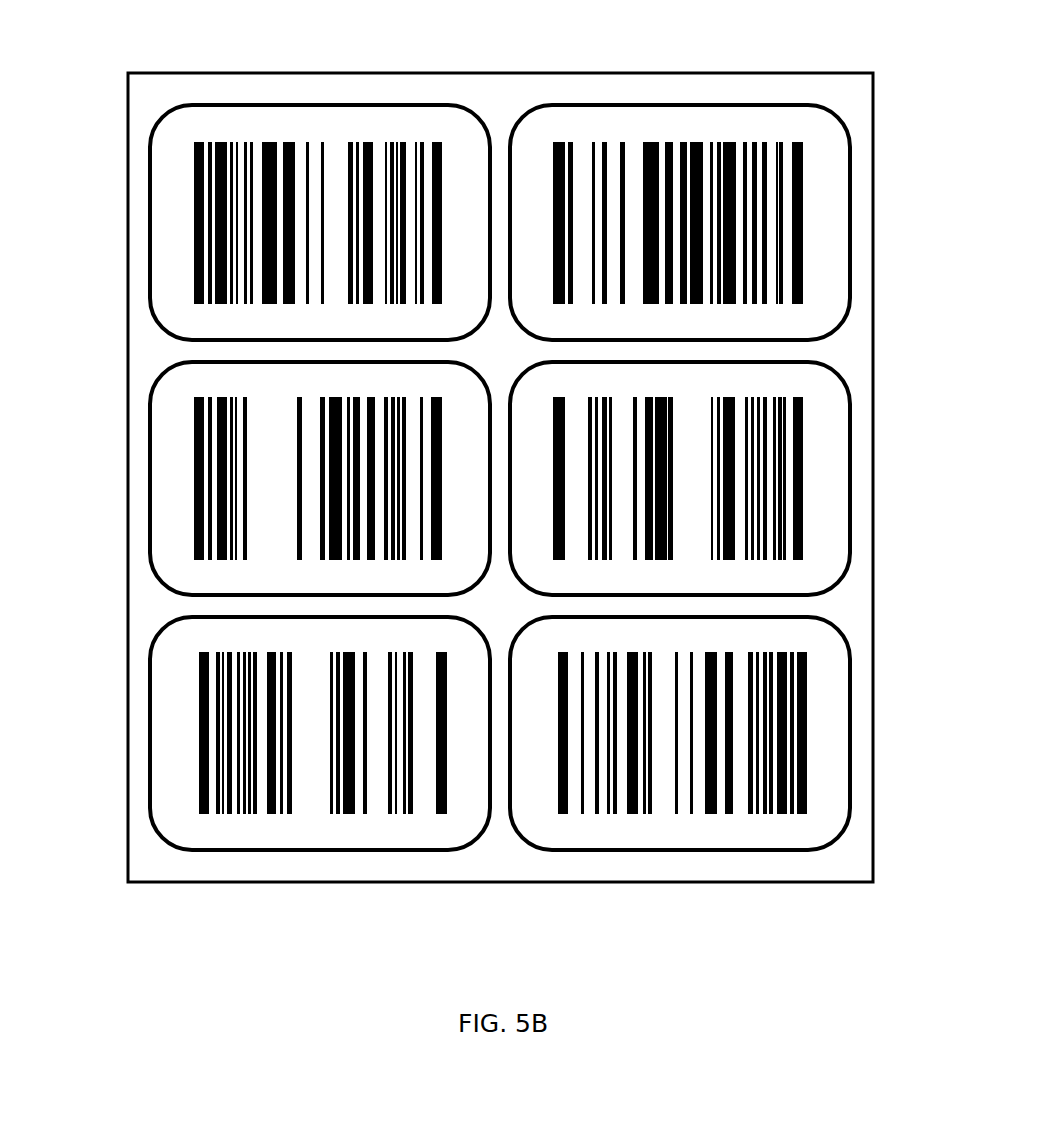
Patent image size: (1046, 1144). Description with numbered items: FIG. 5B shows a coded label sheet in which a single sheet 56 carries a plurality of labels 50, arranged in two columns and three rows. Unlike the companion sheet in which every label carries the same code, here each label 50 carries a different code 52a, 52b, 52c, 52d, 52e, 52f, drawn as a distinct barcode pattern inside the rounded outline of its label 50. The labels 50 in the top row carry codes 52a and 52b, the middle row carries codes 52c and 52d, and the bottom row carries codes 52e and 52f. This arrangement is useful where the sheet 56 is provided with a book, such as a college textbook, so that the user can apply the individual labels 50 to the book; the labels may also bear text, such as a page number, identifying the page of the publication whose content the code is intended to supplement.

The label 50 is at (547, 835).
The code 52a is at (339, 114).
The code 52b is at (657, 114).
The code 52c is at (163, 475).
The code 52d is at (835, 461).
The code 52e is at (164, 717).
The code 52f is at (835, 686).
The sheet 56 is at (842, 870).